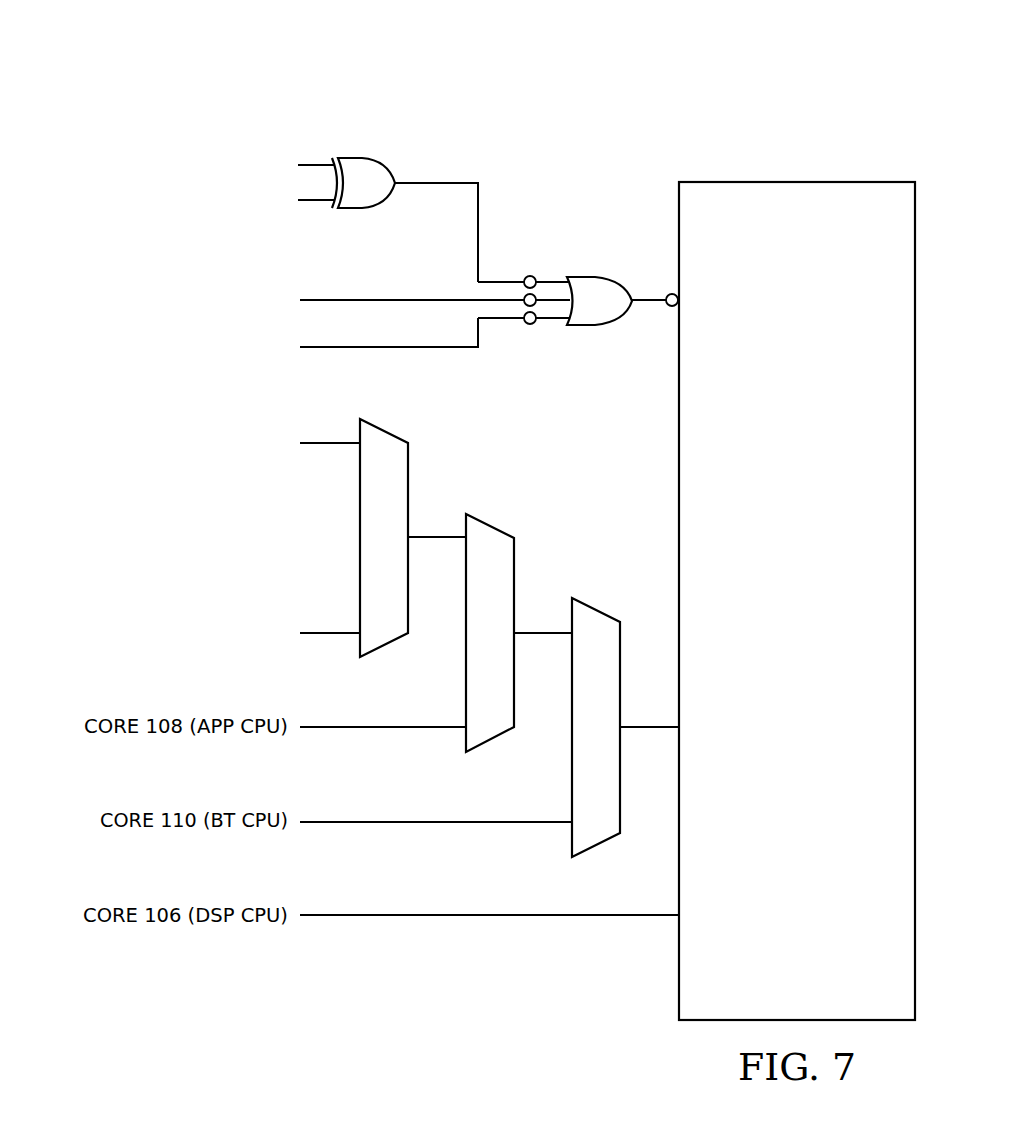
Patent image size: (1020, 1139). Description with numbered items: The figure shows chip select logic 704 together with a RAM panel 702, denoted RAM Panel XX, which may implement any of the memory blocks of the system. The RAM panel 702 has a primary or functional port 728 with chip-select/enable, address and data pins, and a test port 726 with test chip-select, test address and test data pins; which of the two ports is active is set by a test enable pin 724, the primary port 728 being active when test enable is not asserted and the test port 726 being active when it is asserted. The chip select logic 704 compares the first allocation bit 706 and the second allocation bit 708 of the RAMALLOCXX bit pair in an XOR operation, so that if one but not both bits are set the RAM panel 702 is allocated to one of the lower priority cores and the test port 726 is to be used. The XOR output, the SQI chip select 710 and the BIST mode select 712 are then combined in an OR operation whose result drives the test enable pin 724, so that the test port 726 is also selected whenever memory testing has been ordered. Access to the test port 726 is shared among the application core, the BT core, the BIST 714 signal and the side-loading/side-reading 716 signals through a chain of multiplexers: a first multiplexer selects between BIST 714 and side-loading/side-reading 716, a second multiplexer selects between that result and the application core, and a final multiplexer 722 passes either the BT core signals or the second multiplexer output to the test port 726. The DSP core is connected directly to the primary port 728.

The RAM panel 702 is at (852, 173).
The chip select logic 704 is at (212, 58).
The RAMALLOCXX[0] 706 is at (130, 166).
The RAMALLOCXX[1] 708 is at (130, 203).
The SQI chip select 710 is at (100, 301).
The BIST mode select 712 is at (80, 349).
The BIST 714 is at (232, 445).
The side-loading/side-reading 716 is at (131, 636).
The multiplexer 722 is at (599, 609).
The test enable pin 724 is at (740, 303).
The test port 726 is at (795, 745).
The primary port 728 is at (773, 935).